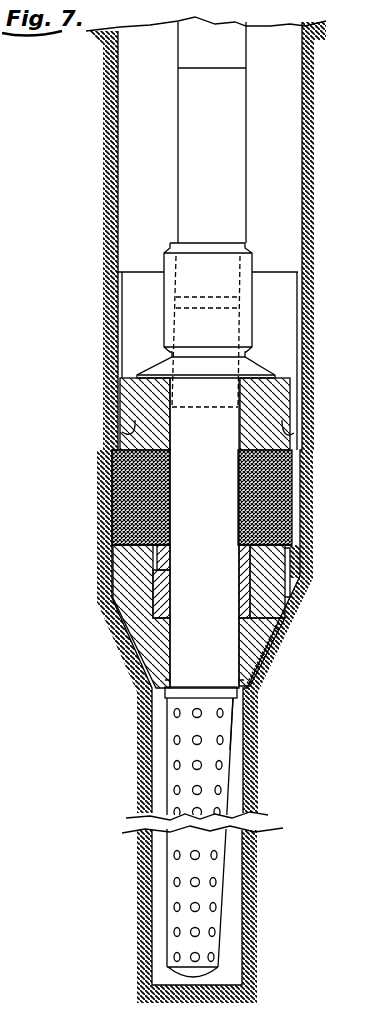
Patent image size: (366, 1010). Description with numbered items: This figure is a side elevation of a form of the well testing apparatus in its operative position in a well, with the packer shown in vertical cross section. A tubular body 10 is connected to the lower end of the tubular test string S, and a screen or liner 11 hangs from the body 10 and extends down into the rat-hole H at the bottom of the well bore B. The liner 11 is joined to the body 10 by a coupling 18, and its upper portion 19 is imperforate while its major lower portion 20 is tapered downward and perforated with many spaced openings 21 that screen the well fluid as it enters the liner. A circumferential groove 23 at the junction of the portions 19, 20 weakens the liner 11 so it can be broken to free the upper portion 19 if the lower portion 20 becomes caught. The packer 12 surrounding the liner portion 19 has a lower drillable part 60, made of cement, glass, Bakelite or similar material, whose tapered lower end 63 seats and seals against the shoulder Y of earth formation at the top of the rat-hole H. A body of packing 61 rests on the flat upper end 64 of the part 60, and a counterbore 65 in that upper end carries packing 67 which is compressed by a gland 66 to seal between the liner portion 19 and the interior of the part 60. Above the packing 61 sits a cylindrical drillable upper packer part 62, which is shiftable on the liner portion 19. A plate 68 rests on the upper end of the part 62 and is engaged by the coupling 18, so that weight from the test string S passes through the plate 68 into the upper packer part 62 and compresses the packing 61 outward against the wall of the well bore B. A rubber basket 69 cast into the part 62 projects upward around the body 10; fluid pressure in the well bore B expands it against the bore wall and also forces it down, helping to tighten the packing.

The tubular body 10 is at (226, 213).
The test string S is at (212, 52).
The well bore B is at (306, 149).
The basket 69 is at (297, 274).
The coupling 18 is at (208, 325).
The plate 68 is at (200, 368).
The upper packer part 62 is at (282, 388).
The packer 12 is at (292, 437).
The body of packing 61 is at (292, 512).
The upper end of the packer part 64 is at (290, 546).
The gland 66 is at (172, 560).
The packing 67 is at (163, 582).
The lower packer part 60 is at (274, 586).
The counterbore 65 is at (170, 612).
The shoulder Y is at (280, 619).
The lower end of the packer part 63 is at (278, 647).
The upper portion of the liner 19 is at (204, 533).
The circumferential groove 23 is at (248, 694).
The liner 11 is at (228, 729).
The lower portion of the liner 20 is at (222, 756).
The openings 21 is at (175, 762).
The rat-hole H is at (250, 779).